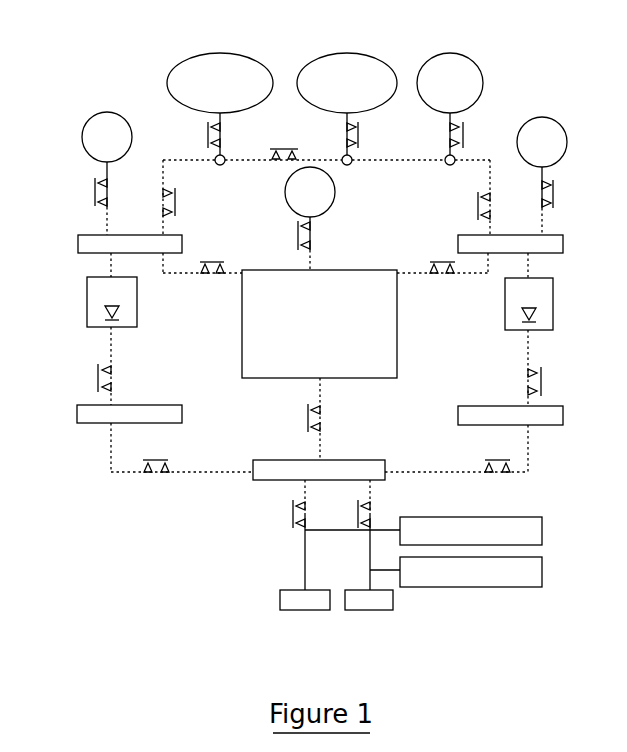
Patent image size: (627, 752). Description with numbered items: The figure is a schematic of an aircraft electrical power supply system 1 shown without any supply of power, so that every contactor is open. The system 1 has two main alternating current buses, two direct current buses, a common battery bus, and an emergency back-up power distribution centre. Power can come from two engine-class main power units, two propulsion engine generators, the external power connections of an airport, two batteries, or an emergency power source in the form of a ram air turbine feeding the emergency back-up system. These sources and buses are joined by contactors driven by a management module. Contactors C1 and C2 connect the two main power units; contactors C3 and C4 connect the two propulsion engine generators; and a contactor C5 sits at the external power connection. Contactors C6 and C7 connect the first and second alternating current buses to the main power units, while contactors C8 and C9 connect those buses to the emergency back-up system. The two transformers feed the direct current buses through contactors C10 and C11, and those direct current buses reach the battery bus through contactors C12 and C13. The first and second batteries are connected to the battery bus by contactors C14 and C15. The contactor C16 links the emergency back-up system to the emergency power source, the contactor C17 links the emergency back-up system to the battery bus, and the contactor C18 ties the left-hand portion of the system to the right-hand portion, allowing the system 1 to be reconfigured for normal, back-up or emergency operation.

The electrical power supply system 1 is at (512, 108).
The contactor C1 is at (190, 135).
The contactor C2 is at (377, 135).
The contactor C3 is at (78, 192).
The contactor C4 is at (571, 193).
The contactor C5 is at (474, 135).
The contactor C6 is at (191, 201).
The contactor C7 is at (461, 204).
The contactor C8 is at (212, 257).
The contactor C9 is at (442, 257).
The contactor C10 is at (86, 378).
The contactor C11 is at (552, 381).
The contactor C12 is at (156, 456).
The contactor C13 is at (497, 456).
The contactor C14 is at (281, 514).
The contactor C15 is at (346, 514).
The contactor C16 is at (285, 235).
The contactor C17 is at (296, 418).
The contactor C18 is at (284, 134).